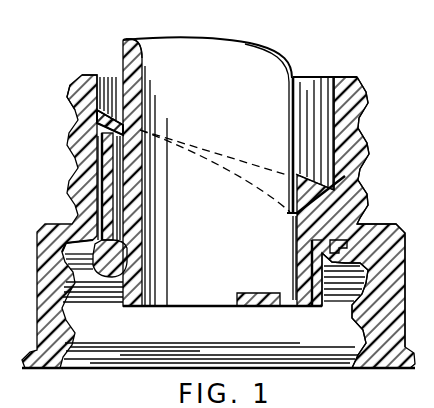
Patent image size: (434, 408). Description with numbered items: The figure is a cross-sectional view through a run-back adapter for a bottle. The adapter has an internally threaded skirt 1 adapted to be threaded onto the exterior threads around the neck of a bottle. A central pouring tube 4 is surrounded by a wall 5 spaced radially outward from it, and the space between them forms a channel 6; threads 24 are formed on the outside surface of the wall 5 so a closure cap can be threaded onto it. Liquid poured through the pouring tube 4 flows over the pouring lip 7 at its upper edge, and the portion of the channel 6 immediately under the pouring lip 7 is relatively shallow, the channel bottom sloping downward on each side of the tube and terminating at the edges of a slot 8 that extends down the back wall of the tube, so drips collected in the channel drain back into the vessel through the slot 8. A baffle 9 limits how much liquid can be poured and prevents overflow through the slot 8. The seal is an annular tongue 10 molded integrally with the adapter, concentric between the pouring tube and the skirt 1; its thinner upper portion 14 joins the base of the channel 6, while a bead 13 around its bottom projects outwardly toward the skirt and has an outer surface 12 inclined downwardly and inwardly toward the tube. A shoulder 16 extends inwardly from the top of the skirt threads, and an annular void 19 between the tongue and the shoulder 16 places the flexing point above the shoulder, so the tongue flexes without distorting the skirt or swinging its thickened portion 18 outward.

The internally threaded skirt 1 is at (45, 317).
The pouring tube 4 is at (222, 46).
The wall 5 is at (350, 87).
The channel 6 is at (310, 80).
The pouring lip 7 is at (118, 40).
The slot 8 is at (289, 106).
The baffle 9 is at (260, 294).
The annular tongue 10 is at (95, 212).
The outer surface of the bead 12 is at (70, 274).
The bead 13 is at (82, 247).
The upper portion of the tongue 14 is at (110, 134).
The shoulder 16 is at (367, 257).
The thickened portion of the skirt 18 is at (390, 237).
The annular void 19 is at (362, 228).
The threads 24 is at (75, 93).